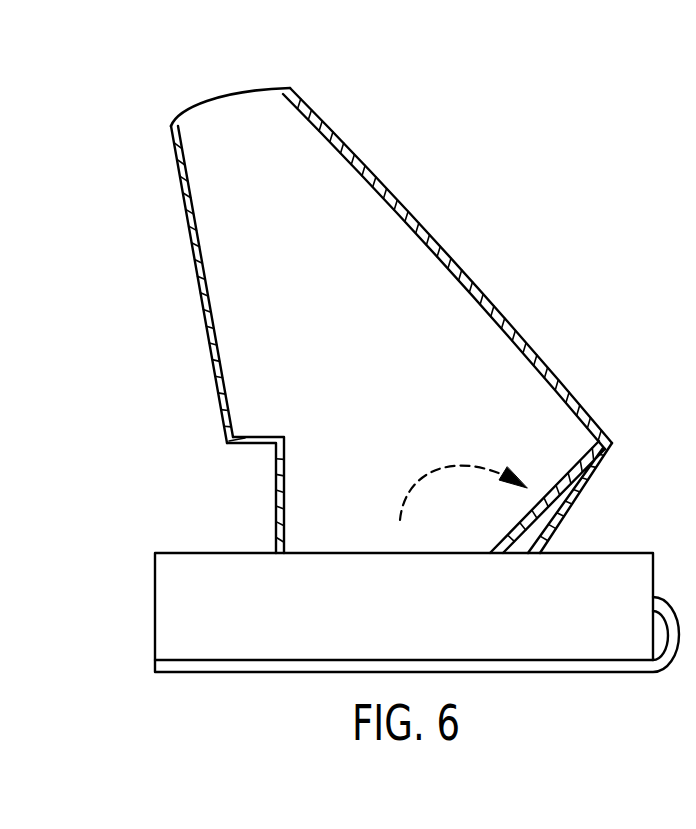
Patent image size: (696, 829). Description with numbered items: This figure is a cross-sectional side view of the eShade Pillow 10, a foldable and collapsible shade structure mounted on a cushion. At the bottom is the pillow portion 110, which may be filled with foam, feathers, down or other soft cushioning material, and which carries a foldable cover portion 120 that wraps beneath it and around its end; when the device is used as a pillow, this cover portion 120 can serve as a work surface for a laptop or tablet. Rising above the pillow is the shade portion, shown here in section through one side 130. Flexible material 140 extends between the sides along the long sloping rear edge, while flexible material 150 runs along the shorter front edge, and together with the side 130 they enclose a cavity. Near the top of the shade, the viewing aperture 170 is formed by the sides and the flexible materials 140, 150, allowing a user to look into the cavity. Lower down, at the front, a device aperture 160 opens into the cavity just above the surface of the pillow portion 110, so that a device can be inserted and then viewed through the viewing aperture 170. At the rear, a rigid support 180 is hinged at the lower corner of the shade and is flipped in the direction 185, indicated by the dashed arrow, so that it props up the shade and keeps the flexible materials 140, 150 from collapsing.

The display device 10 is at (9, 517).
The pillow portion 110 is at (198, 615).
The foldable cover portion 120 is at (200, 666).
The side 130 is at (295, 221).
The flexible material 140 is at (414, 217).
The flexible material 150 is at (187, 216).
The device aperture 160 is at (276, 505).
The viewing aperture 170 is at (230, 93).
The hinge flap 180 is at (578, 462).
The rigid support / direction 185 is at (442, 467).